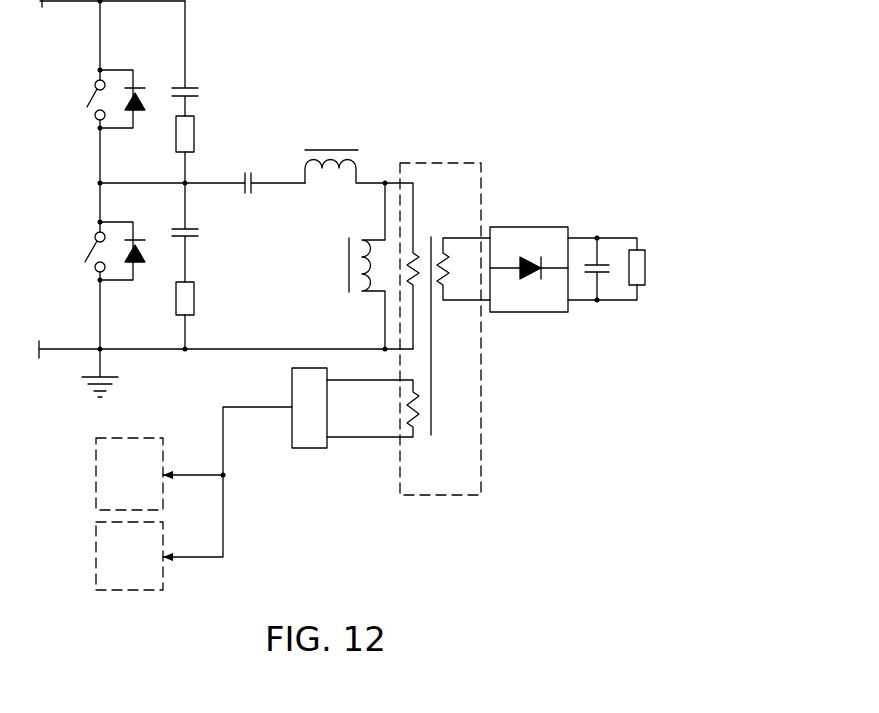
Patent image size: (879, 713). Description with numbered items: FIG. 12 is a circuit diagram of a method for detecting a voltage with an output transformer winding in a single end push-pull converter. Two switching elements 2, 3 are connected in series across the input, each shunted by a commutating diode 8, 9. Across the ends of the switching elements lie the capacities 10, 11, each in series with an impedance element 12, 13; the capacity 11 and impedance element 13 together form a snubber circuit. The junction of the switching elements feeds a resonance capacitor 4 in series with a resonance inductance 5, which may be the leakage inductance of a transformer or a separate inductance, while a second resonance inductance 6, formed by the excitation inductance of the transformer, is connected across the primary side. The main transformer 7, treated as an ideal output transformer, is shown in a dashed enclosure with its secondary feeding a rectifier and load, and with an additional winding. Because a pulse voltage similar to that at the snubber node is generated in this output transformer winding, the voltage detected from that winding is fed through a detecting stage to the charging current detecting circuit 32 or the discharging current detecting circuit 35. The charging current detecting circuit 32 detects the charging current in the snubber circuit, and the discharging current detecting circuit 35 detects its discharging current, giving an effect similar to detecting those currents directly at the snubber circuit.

The switching element 2 is at (87, 107).
The switching element 3 is at (85, 262).
The resonance capacitor 4 is at (254, 192).
The resonance inductance 5 is at (333, 148).
The resonance inductance 6 is at (349, 268).
The main transformer 7 is at (483, 178).
The commutating diode 8 is at (142, 112).
The commutating diode 9 is at (140, 265).
The capacity 10 is at (200, 90).
The capacity 11 is at (195, 240).
The impedance element 12 is at (195, 135).
The impedance element 13 is at (176, 318).
The charging current detecting circuit 32 is at (129, 474).
The discharging current detecting circuit 35 is at (129, 556).